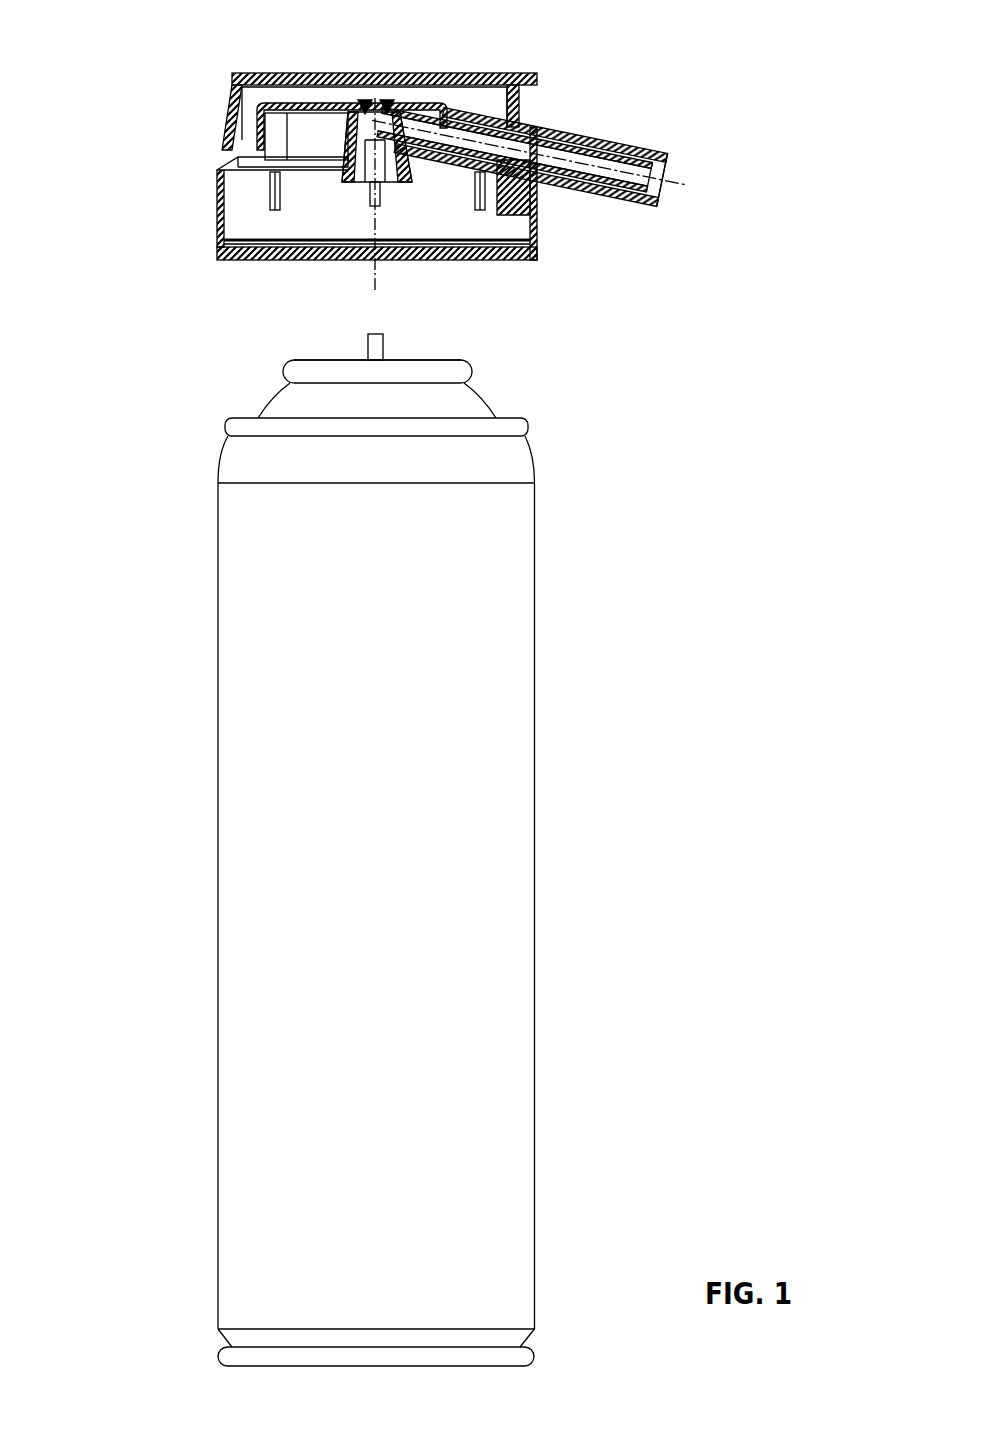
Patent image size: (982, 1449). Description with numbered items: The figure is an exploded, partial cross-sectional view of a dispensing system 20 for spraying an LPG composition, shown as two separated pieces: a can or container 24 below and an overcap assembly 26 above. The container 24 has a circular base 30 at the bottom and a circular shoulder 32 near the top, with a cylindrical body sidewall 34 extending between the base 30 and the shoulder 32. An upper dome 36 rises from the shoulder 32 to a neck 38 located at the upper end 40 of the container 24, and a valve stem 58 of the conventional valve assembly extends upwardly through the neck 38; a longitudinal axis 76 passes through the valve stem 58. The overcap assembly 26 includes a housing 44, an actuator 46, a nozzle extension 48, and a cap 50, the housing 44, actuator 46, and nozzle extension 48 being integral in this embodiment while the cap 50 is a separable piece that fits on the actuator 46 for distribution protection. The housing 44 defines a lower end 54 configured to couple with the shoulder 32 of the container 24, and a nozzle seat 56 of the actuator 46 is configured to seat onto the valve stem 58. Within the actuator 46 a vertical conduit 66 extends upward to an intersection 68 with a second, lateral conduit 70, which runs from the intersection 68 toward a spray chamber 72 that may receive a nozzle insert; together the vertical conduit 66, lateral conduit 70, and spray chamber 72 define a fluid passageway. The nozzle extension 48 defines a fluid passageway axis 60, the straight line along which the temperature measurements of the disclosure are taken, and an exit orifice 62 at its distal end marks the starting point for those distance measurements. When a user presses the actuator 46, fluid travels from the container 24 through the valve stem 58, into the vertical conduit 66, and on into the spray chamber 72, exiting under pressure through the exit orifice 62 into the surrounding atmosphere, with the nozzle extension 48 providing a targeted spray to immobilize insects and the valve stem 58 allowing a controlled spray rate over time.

The dispensing system 20 is at (765, 241).
The container 24 is at (415, 840).
The overcap assembly 26 is at (114, 31).
The circular base 30 is at (540, 1349).
The circular shoulder 32 is at (525, 430).
The body sidewall 34 is at (525, 1030).
The upper dome 36 is at (490, 402).
The neck 38 is at (458, 362).
The upper end 40 is at (312, 360).
The housing 44 is at (217, 222).
The actuator 46 is at (327, 100).
The nozzle extension 48 is at (595, 128).
The cap 50 is at (467, 72).
The lower end 54 is at (537, 257).
The nozzle seat 56 is at (391, 170).
The valve stem 58 is at (385, 347).
The fluid passageway axis 60 is at (677, 182).
The exit orifice 62 is at (668, 198).
The vertical conduit 66 is at (363, 100).
The intersection 68 is at (388, 100).
The lateral conduit 70 is at (549, 151).
The spray chamber 72 is at (624, 163).
The longitudinal axis 76 is at (368, 283).